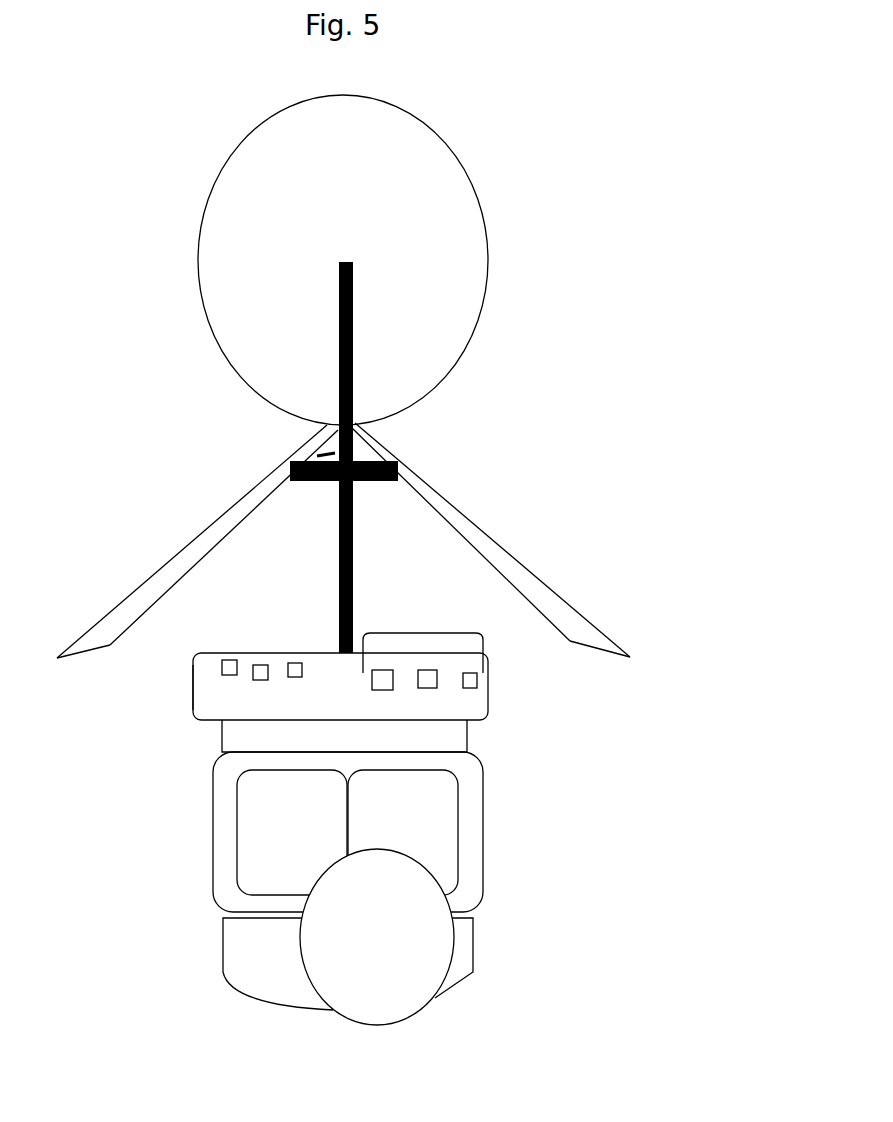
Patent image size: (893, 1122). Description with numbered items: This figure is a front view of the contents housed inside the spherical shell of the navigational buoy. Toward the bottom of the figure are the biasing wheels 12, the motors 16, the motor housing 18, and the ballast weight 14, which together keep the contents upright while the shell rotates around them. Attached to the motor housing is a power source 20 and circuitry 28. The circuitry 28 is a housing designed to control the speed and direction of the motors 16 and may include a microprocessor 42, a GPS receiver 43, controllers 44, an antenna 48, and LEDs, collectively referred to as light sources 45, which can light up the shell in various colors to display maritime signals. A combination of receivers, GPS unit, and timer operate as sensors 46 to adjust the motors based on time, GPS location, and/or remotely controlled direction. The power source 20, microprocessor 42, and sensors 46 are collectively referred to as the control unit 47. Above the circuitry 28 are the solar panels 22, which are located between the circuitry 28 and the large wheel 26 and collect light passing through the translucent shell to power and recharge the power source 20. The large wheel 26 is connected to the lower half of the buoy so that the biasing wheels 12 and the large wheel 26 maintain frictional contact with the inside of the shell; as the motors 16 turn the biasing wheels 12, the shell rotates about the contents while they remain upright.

The biasing wheels 12 is at (450, 979).
The ballast weight 14 is at (272, 933).
The motors 16 is at (283, 827).
The motor housing 18 is at (483, 832).
The power source 20 is at (253, 733).
The solar panels 22 is at (520, 565).
The large wheel 26 is at (490, 262).
The circuitry 28 is at (488, 688).
The microprocessor 42 is at (225, 658).
The GPS receiver 43 is at (480, 682).
The controllers 44 is at (259, 664).
The light sources 45 is at (294, 663).
The sensors 46 is at (430, 635).
The control unit 47 is at (222, 738).
The antenna 48 is at (393, 690).